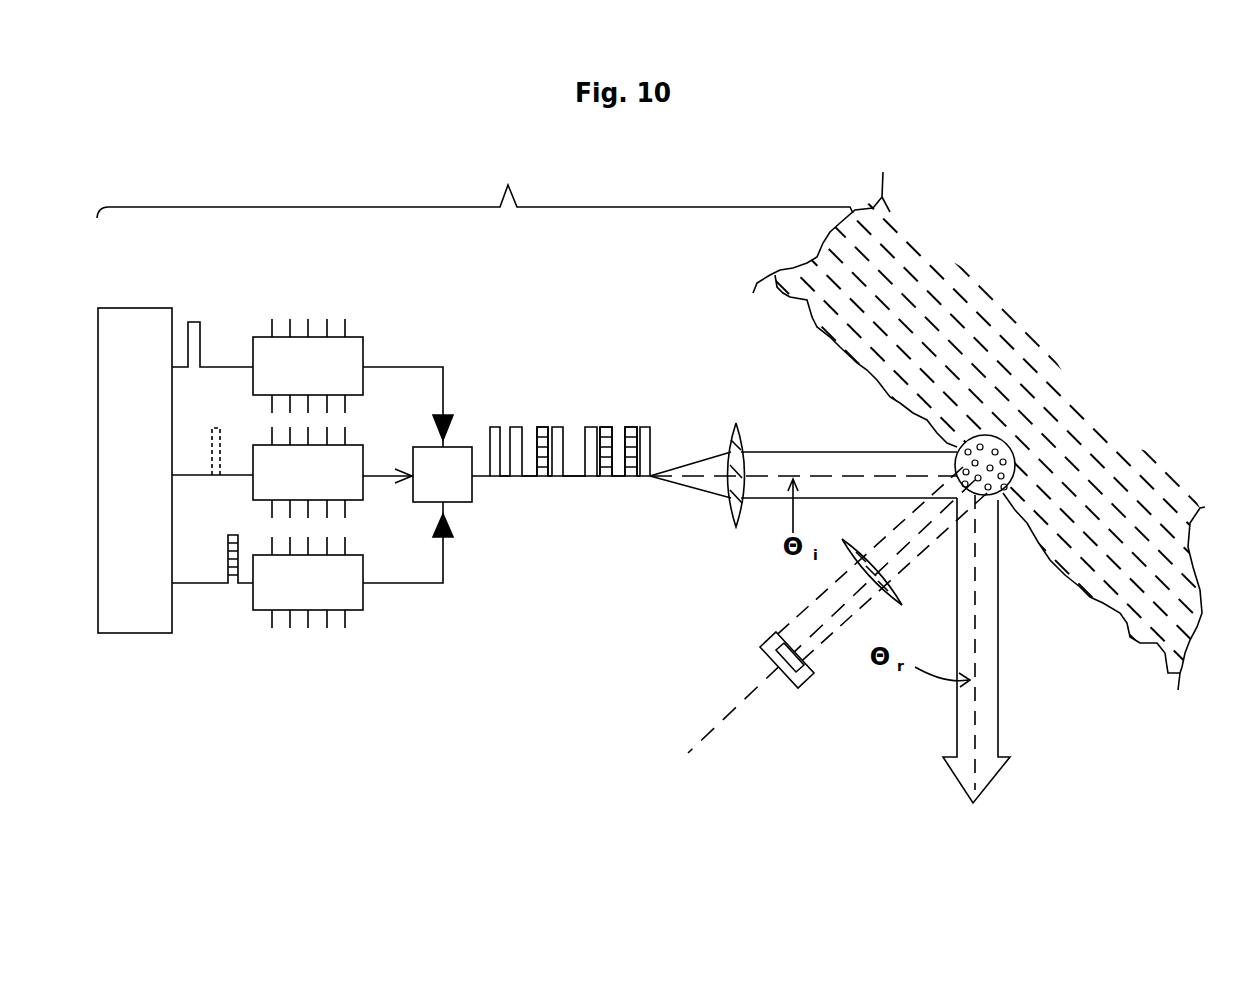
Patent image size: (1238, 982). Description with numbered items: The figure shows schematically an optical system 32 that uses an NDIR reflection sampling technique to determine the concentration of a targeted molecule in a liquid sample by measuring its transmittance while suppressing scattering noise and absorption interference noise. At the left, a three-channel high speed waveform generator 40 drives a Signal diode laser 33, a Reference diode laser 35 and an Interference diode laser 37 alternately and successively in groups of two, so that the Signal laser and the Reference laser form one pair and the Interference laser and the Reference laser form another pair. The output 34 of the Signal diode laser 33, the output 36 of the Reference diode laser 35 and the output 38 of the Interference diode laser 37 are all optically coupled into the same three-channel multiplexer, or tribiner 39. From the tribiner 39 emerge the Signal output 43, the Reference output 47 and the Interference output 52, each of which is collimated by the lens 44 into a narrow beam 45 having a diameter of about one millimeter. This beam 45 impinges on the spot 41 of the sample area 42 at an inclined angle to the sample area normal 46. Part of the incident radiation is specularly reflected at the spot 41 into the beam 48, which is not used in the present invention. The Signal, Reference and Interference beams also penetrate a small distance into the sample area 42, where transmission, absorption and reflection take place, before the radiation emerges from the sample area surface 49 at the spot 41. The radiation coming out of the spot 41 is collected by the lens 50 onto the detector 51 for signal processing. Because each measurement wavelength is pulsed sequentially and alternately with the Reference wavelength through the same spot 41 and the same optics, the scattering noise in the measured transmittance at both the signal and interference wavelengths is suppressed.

The optical system 32 is at (475, 184).
The Signal diode laser 33 is at (317, 368).
The output of Signal diode laser 34 is at (398, 365).
The Reference diode laser 35 is at (298, 472).
The output of Reference diode laser 36 is at (377, 478).
The Interference diode laser 37 is at (292, 592).
The output of Interference diode laser 38 is at (400, 587).
The 3-channel multiplexer (tribiner) 39 is at (445, 472).
The 3-channel high speed waveform generator 40 is at (142, 597).
The spot 41 is at (975, 478).
The sample area 42 is at (1033, 440).
The output of tribiner for Signal laser 43 is at (592, 427).
The lens 44 is at (744, 440).
The narrow beam 45 is at (833, 460).
The sample area normal 46 is at (737, 707).
The output of tribiner for Reference laser 47 is at (513, 476).
The specularly reflected beam 48 is at (977, 690).
The sample area surface 49 is at (960, 480).
The lens 50 is at (905, 603).
The detector 51 is at (760, 648).
The output of tribiner for Interference laser 52 is at (547, 427).